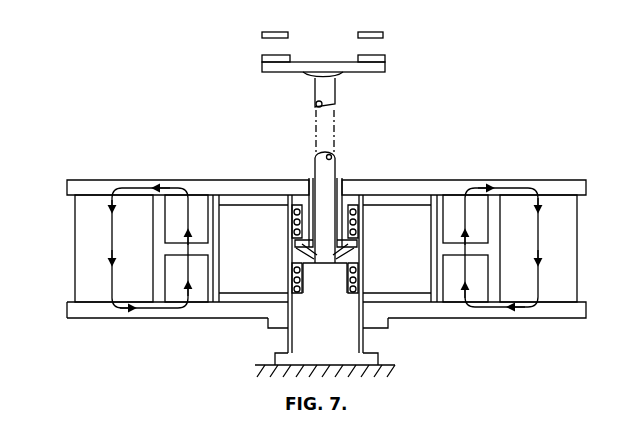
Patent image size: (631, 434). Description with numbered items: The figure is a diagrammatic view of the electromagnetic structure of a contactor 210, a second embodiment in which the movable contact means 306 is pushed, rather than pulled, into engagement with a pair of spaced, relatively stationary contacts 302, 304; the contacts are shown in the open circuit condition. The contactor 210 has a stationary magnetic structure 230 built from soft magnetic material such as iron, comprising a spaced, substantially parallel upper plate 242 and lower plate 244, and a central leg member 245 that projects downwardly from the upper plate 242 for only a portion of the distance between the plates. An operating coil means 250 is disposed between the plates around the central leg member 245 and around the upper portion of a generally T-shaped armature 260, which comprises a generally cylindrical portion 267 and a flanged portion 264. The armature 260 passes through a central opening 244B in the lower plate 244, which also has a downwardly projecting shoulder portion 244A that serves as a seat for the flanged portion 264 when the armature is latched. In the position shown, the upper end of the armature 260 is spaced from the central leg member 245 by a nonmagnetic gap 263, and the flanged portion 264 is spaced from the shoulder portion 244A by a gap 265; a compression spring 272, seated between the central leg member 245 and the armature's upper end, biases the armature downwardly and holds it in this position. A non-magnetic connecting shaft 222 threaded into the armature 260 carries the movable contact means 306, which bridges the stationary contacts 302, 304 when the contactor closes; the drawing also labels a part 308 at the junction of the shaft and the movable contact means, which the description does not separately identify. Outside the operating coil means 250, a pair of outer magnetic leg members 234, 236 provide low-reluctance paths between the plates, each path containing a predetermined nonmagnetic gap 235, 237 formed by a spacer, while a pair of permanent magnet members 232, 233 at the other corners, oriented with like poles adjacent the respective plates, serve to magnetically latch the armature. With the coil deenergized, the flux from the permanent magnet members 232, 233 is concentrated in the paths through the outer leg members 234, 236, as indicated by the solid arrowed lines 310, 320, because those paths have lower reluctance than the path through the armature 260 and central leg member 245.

The contactor 210 is at (242, 138).
The connecting shaft 222 is at (335, 168).
The stationary magnetic structure 230 is at (57, 252).
The permanent magnet member 232 is at (75, 268).
The permanent magnet member 233 is at (577, 267).
The outer magnetic leg member 234 is at (170, 277).
The nonmagnetic gap 235 is at (203, 248).
The outer magnetic leg member 236 is at (485, 278).
The nonmagnetic gap 237 is at (443, 247).
The upper plate 242 is at (427, 183).
The lower plate 244 is at (463, 315).
The shoulder portion 244A is at (272, 327).
The central opening 244B is at (368, 334).
The central leg member 245 is at (303, 195).
The operating coil means 250 is at (238, 197).
The armature 260 is at (440, 375).
The nonmagnetic gap 263 is at (358, 257).
The flanged portion 264 is at (270, 362).
The gap 265 is at (279, 344).
The cylindrical portion 267 is at (368, 348).
The compression spring 272 is at (357, 222).
The stationary contact 302 is at (262, 32).
The stationary contact 304 is at (372, 32).
The movable contact means 306 is at (385, 65).
The pivot joint 308 is at (340, 75).
The solid arrowed line 310 is at (112, 190).
The solid arrowed line 320 is at (538, 192).